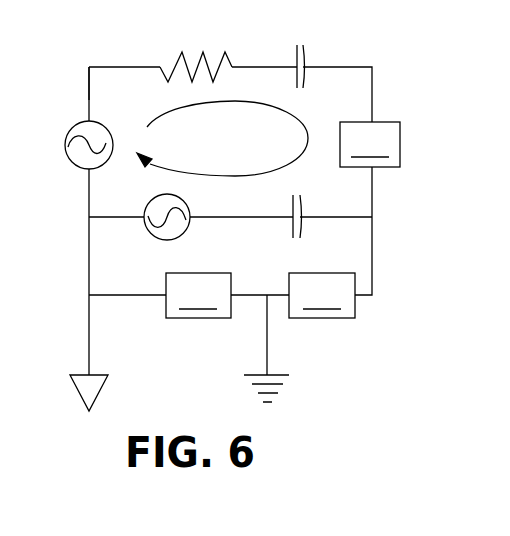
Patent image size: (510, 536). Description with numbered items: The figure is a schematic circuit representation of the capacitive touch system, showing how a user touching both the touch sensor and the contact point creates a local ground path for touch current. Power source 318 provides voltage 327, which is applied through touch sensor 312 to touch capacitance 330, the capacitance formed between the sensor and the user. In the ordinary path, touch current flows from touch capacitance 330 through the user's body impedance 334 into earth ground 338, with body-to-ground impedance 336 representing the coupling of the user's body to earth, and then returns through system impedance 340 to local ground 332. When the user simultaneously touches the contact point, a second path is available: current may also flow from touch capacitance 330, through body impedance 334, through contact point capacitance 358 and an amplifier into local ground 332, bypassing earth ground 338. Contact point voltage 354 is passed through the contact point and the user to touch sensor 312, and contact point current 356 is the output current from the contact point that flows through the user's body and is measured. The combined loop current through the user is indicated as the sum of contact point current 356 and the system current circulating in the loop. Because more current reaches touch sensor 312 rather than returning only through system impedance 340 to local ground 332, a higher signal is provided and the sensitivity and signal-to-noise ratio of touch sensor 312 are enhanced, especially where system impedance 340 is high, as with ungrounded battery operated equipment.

The touch sensor 312 is at (187, 53).
The power source 318 is at (66, 154).
The voltage 327 is at (88, 84).
The touch capacitance 330 is at (305, 50).
The local ground 332 is at (100, 390).
The body impedance 334 is at (370, 144).
The body-to-ground impedance 336 is at (322, 295).
The earth ground 338 is at (285, 377).
The system impedance 340 is at (198, 295).
The contact point voltage 354 is at (218, 218).
The contact point current 356 is at (155, 118).
The contact point capacitance 358 is at (302, 207).